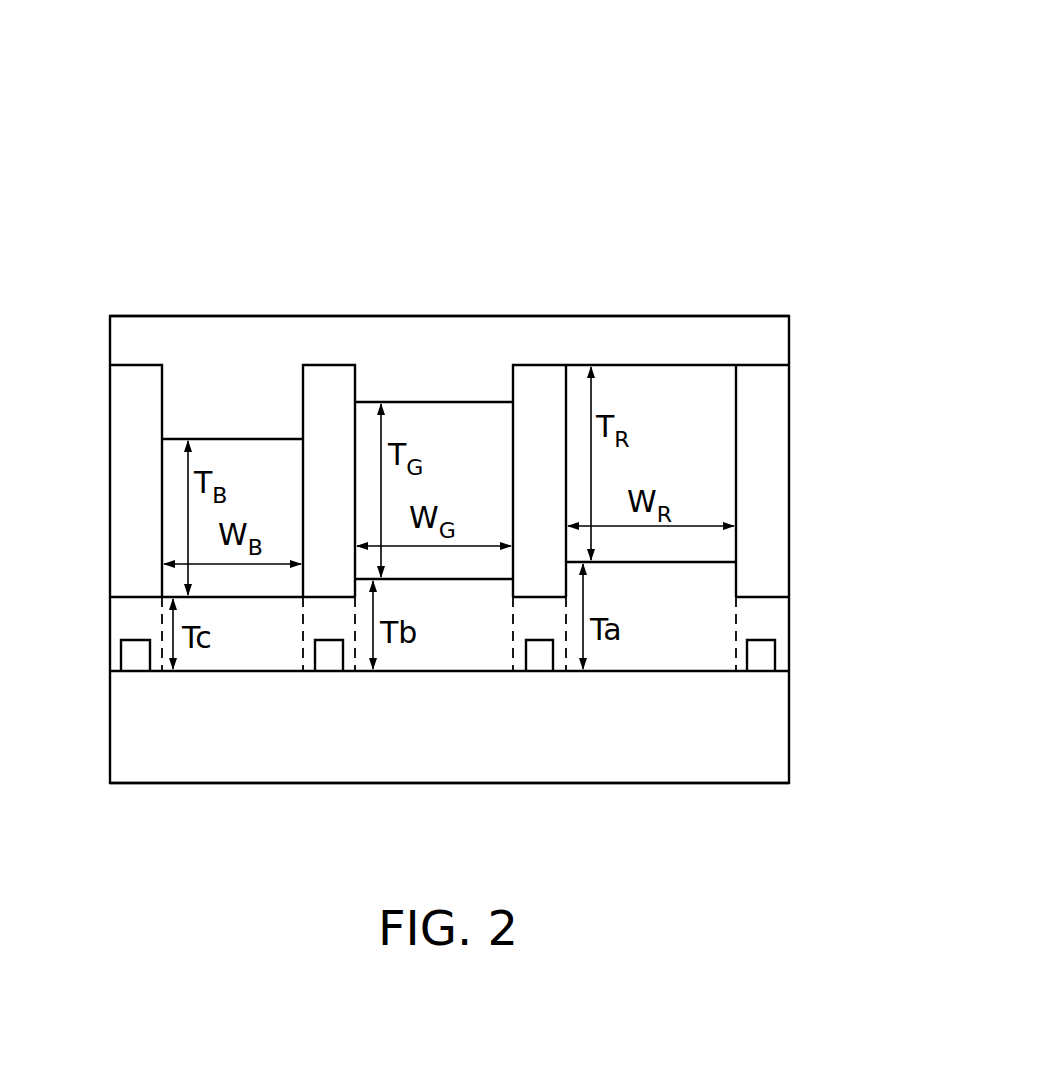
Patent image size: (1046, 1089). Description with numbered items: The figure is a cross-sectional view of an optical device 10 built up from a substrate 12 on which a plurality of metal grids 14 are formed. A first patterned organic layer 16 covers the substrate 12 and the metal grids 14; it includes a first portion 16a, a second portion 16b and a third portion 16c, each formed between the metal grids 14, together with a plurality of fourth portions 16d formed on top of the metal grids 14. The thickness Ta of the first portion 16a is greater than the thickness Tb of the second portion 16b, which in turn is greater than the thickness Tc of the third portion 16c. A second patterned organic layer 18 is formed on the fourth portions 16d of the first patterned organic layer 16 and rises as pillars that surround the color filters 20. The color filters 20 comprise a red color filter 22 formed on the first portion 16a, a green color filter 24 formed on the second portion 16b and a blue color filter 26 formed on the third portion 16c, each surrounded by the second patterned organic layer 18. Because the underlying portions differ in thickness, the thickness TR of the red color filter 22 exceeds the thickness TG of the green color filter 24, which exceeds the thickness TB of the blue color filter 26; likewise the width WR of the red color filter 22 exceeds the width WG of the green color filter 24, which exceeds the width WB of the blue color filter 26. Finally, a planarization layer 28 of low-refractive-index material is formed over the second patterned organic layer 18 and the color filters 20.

The optical device 10 is at (125, 198).
The substrate 12 is at (780, 727).
The metal grids 14 is at (126, 656).
The first patterned organic layer 16 is at (716, 28).
The first portion 16a is at (722, 653).
The second portion 16b is at (500, 653).
The third portion 16c is at (292, 653).
The fourth portions 16d is at (130, 618).
The second patterned organic layer 18 is at (328, 380).
The color filters 20 is at (575, 28).
The red color filter 22 is at (707, 380).
The green color filter 24 is at (486, 422).
The blue color filter 26 is at (276, 455).
The planarization layer 28 is at (778, 340).